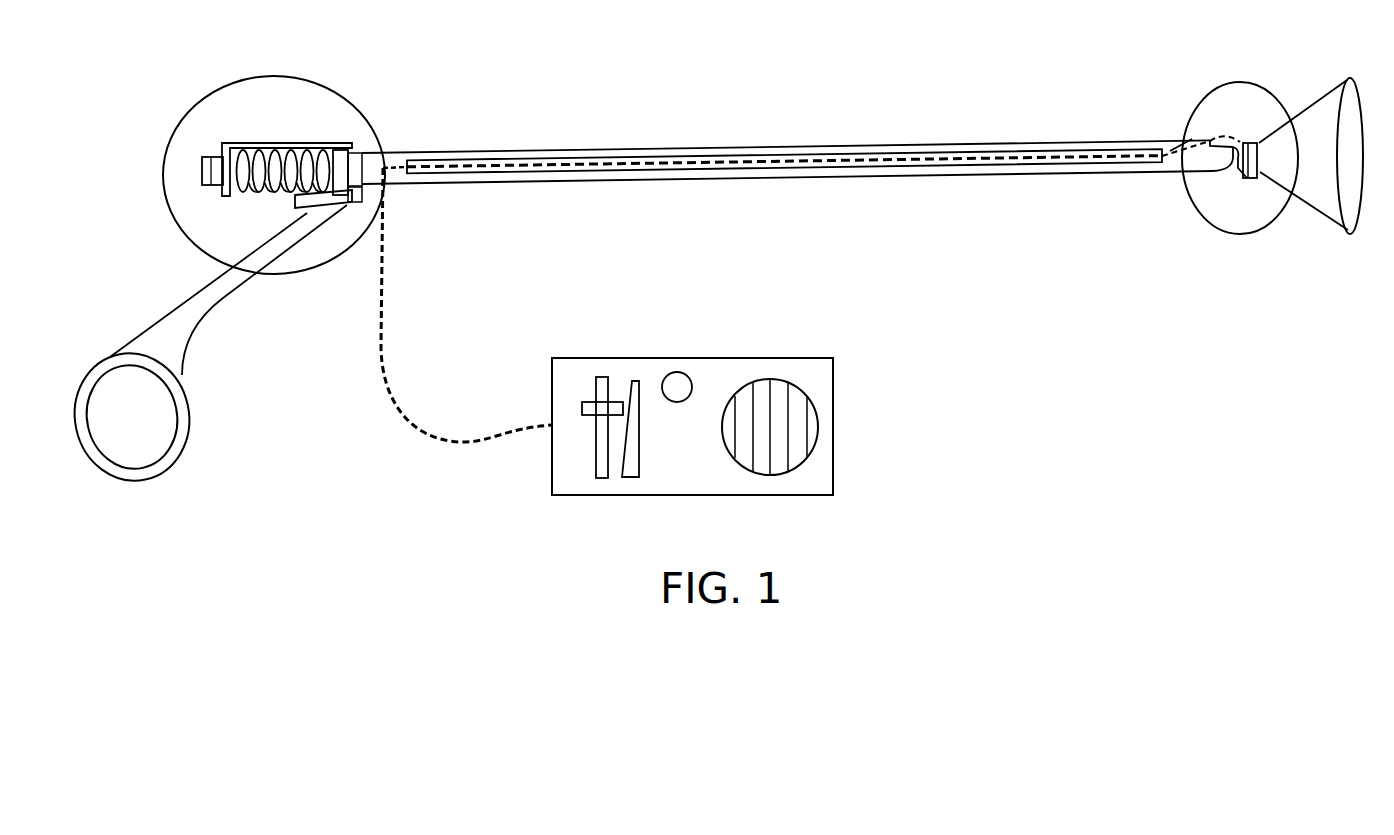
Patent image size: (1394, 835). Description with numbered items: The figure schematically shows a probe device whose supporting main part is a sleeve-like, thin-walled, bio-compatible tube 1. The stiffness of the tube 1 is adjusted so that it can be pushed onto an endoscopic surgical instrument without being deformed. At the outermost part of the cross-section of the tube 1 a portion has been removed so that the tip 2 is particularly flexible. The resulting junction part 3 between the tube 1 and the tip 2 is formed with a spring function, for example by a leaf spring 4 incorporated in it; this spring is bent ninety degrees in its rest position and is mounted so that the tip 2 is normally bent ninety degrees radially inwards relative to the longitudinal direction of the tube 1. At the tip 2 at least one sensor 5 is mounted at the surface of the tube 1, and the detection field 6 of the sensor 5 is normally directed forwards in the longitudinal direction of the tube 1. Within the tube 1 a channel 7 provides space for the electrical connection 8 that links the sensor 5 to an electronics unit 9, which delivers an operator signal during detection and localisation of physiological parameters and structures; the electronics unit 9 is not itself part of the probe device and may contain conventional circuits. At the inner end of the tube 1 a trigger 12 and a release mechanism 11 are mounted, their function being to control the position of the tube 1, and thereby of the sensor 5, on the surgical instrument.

The tube 1 is at (808, 180).
The tip 2 is at (1188, 207).
The junction part 3 is at (1233, 125).
The leaf spring 4 is at (1182, 145).
The sensor 5 is at (1263, 188).
The detection field 6 is at (1357, 113).
The channel 7 is at (588, 167).
The electrical connection 8 is at (392, 342).
The electronics unit 9 is at (836, 422).
The release mechanism 11 is at (343, 97).
The trigger 12 is at (183, 440).